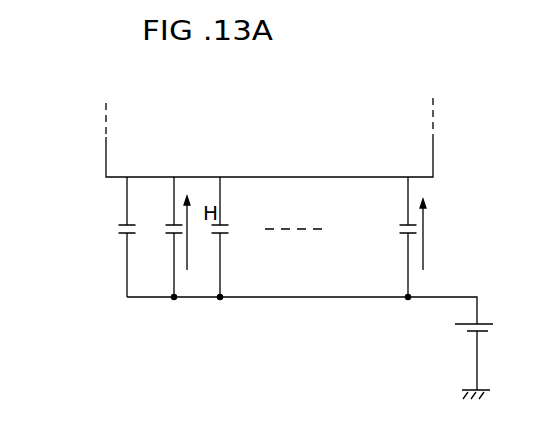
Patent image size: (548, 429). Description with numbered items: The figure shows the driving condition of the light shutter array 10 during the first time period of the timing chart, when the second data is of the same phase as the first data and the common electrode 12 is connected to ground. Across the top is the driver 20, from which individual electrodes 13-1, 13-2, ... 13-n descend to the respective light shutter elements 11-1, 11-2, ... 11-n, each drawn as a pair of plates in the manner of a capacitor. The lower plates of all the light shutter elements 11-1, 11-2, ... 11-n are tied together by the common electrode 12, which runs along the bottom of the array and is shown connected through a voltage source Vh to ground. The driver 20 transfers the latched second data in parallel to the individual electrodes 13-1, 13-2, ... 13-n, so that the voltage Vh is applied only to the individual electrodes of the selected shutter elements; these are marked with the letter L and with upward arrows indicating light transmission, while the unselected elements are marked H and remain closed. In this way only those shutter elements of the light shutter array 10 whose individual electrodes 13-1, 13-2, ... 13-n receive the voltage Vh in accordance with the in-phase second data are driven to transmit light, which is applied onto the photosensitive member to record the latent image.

The driver 20 is at (433, 141).
The individual electrode 13-1 is at (127, 191).
The individual electrode 13-2 is at (174, 195).
The individual electrode 13-n is at (408, 191).
The light shutter array 10 is at (227, 278).
The light shutter element 11-1 is at (118, 231).
The light shutter element 11-2 is at (165, 231).
The light shutter element 11-n is at (399, 232).
The common electrode 12 is at (441, 297).